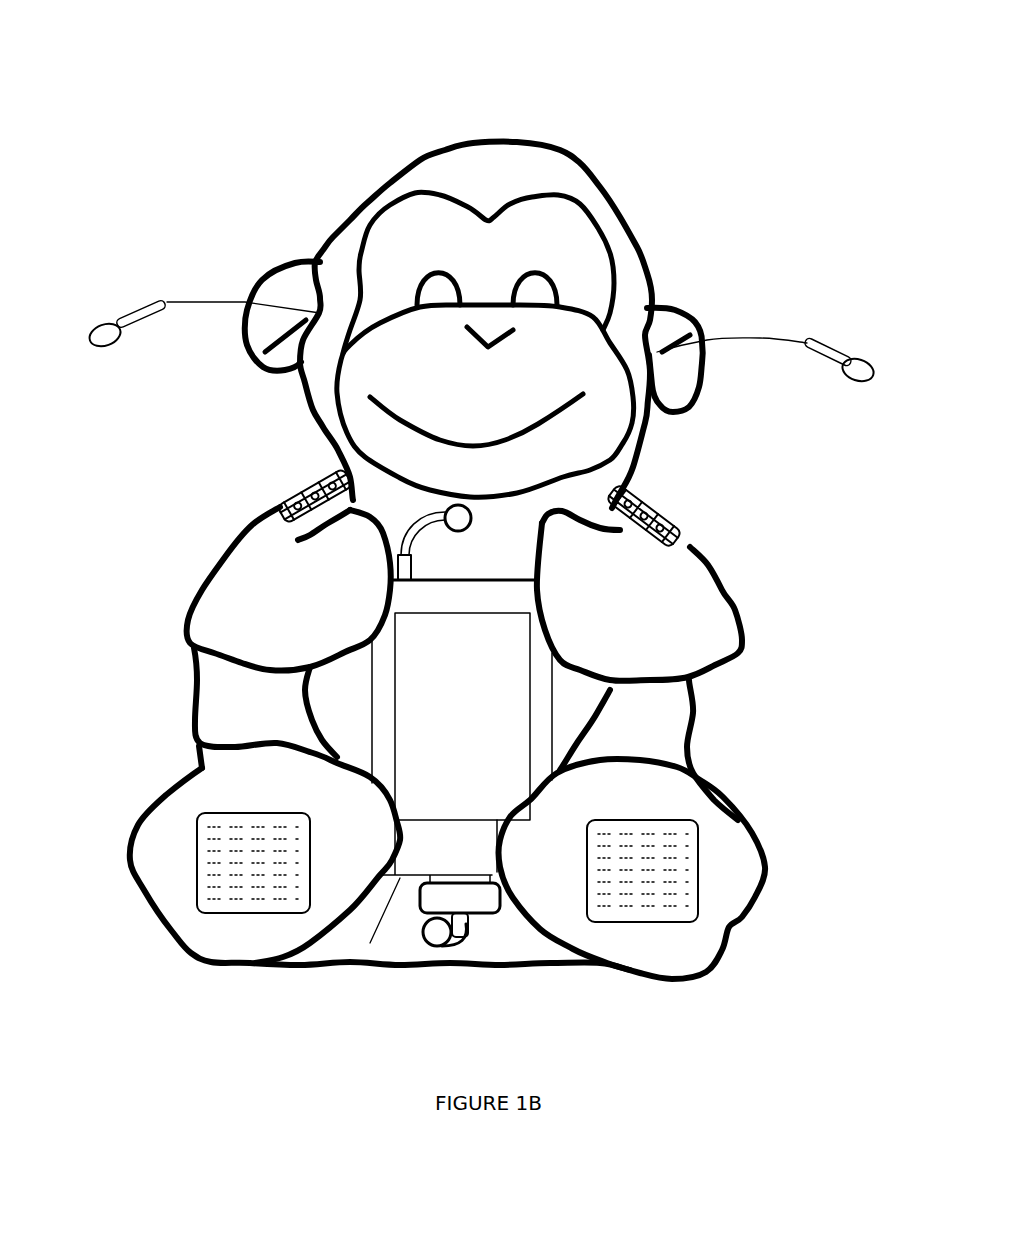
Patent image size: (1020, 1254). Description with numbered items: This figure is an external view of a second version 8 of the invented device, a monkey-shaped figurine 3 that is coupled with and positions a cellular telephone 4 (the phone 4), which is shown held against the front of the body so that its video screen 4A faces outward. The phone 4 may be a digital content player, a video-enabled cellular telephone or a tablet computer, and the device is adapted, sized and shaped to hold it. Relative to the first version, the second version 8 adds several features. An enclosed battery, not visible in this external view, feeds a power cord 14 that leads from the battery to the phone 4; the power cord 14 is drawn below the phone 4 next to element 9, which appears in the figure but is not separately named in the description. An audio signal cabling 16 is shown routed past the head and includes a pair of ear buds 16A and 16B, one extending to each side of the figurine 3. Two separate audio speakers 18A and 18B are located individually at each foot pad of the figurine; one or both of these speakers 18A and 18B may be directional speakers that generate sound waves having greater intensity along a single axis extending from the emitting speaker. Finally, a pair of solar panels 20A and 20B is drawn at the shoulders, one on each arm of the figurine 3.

The second version 8 is at (197, 94).
The head 3 is at (430, 157).
The audio signal cabling 16 is at (200, 297).
The ear bud 16A is at (112, 350).
The ear bud 16B is at (856, 385).
The solar panel 20A is at (298, 497).
The solar panel 20B is at (655, 505).
The cellular telephone 4 is at (373, 670).
The video screen 4A is at (530, 667).
The audio speaker 18A is at (237, 915).
The audio speaker 18B is at (703, 870).
The connector housing 9 is at (393, 877).
The power cord 14 is at (460, 940).